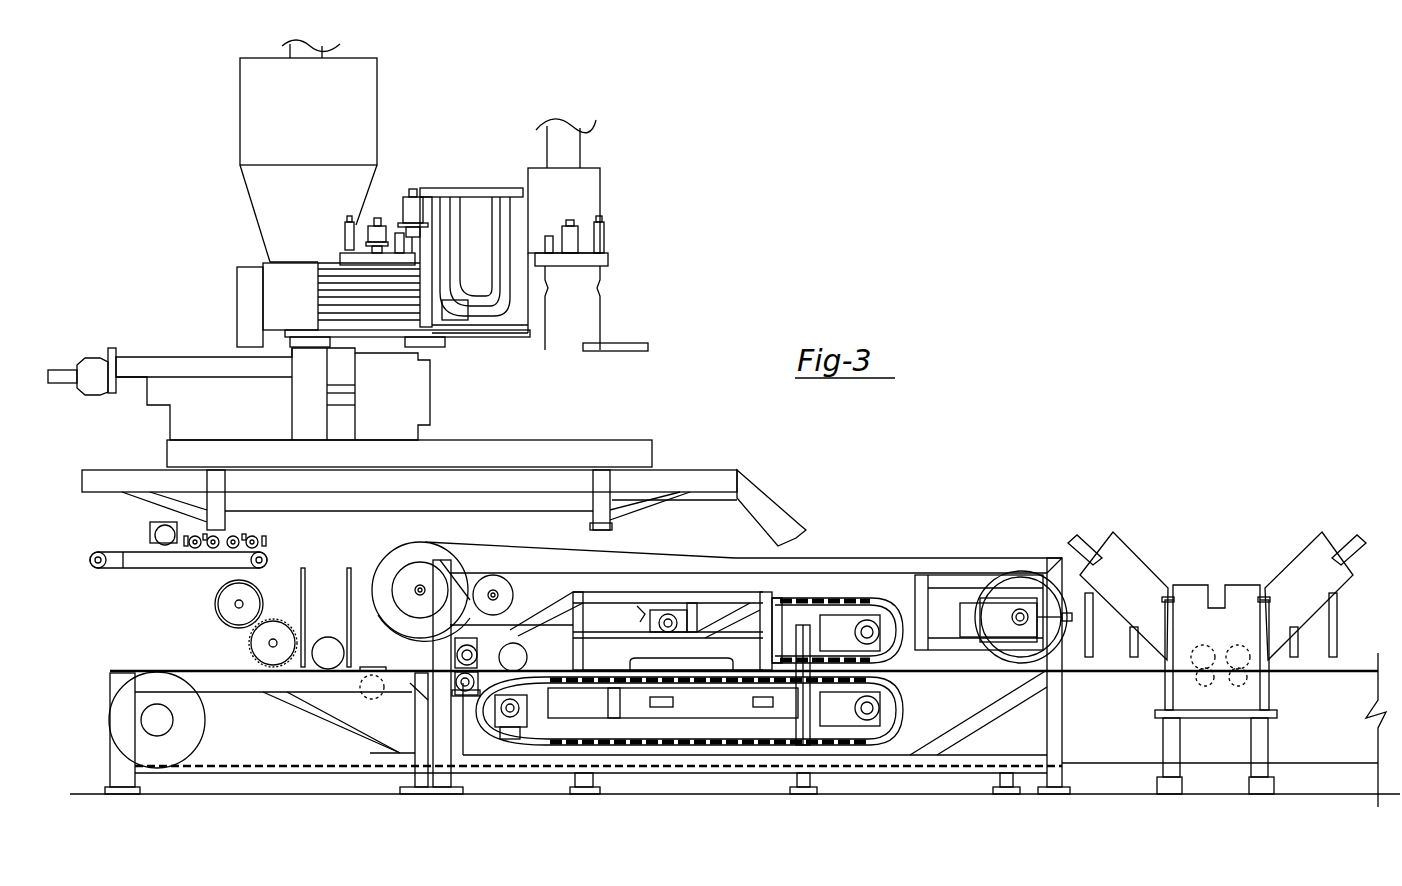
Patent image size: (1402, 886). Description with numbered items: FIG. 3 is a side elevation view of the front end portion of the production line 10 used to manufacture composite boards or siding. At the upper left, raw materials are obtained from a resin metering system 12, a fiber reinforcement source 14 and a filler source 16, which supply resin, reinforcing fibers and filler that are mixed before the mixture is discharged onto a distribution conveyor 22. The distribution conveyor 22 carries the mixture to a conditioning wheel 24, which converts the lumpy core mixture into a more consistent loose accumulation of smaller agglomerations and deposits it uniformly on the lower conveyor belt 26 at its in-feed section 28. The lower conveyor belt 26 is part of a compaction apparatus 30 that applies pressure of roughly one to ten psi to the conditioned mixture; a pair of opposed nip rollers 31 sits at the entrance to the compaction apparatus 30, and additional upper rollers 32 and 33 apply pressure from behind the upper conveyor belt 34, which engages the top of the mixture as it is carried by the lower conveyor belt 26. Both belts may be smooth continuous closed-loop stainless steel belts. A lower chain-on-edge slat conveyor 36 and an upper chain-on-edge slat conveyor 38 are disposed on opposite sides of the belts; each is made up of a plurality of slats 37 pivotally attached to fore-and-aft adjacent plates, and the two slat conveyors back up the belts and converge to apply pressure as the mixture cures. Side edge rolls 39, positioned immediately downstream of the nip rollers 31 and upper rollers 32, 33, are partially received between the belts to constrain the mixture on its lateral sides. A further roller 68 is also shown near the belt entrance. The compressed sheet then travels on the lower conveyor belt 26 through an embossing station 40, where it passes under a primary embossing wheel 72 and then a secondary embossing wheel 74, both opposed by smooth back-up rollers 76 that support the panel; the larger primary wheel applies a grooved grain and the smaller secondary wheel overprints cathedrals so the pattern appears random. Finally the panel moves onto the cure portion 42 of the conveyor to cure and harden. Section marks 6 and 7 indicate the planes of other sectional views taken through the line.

The production line 10 is at (1011, 504).
The resin metering system 12 is at (378, 222).
The fiber reinforcement source 14 is at (565, 148).
The filler source 16 is at (318, 118).
The distribution conveyor 22 is at (121, 571).
The conditioning wheel 24 is at (262, 651).
The lower conveyor belt 26 is at (210, 680).
The in-feed section 28 is at (180, 686).
The compaction apparatus 30 is at (842, 584).
The nip rollers 31 is at (378, 698).
The upper roller 32 is at (418, 698).
The upper roller 33 is at (513, 643).
The upper conveyor belt 34 is at (470, 545).
The lower chain-on-edge slat conveyor 36 is at (702, 748).
The slats 37 is at (888, 596).
The upper chain-on-edge slat conveyor 38 is at (780, 584).
The side edge rolls 39 is at (455, 650).
The embossing station 40 is at (1193, 585).
The cure portion 42 is at (1353, 665).
The roller 68 is at (329, 638).
The primary embossing wheel 72 is at (1200, 645).
The secondary embossing wheel 74 is at (1246, 645).
The smooth back-up rollers 76 is at (1236, 686).
The section line 6- 6 is at (133, 528).
The section line 7- 7 is at (382, 663).